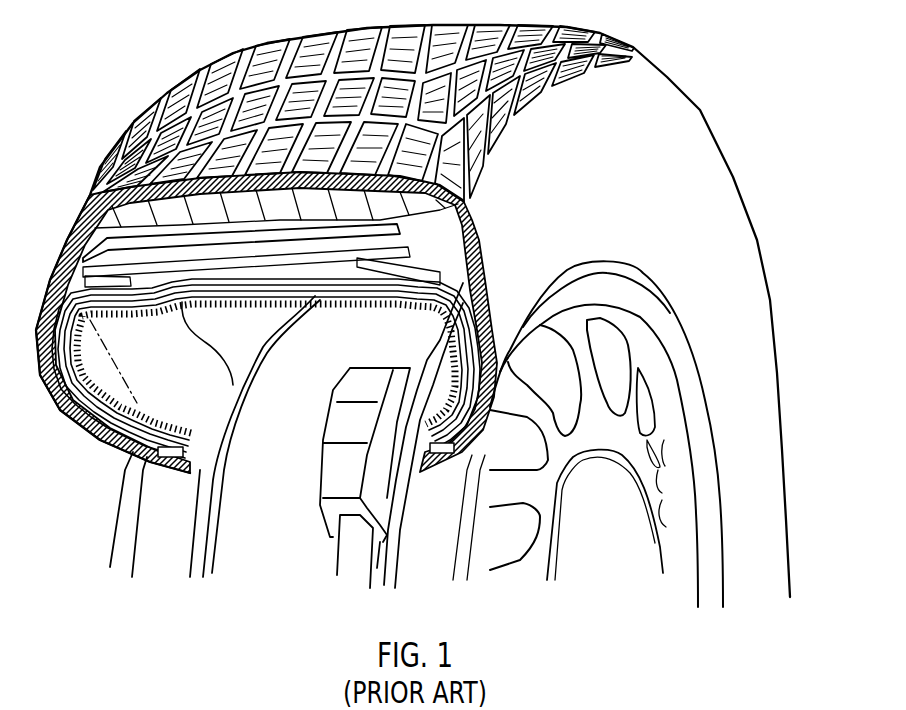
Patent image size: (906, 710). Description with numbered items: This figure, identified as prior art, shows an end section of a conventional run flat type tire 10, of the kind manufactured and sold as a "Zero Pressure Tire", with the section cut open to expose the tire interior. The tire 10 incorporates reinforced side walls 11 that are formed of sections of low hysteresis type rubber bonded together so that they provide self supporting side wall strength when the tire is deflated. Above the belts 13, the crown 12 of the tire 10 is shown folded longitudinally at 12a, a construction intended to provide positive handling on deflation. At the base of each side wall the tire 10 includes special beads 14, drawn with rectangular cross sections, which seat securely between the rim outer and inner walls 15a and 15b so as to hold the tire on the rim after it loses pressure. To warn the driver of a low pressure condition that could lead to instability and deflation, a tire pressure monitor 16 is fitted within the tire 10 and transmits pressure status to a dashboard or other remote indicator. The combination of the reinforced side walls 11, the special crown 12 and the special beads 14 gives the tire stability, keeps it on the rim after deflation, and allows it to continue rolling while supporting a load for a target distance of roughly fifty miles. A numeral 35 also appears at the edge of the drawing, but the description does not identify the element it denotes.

The tire 10 is at (754, 201).
The reinforced side walls 11 is at (487, 323).
The crown 12 is at (360, 230).
The longitudinal fold of crown 12a is at (235, 190).
The belts 13 is at (58, 265).
The special beads 14 is at (133, 452).
The rim outer wall 15a is at (122, 551).
The rim inner wall 15b is at (200, 533).
The tire pressure monitor 16 is at (333, 478).
The element 35 is at (748, 709).